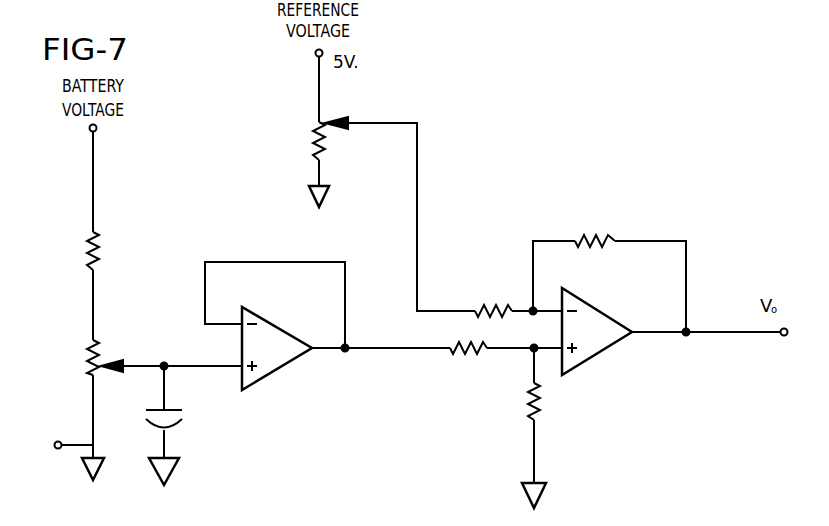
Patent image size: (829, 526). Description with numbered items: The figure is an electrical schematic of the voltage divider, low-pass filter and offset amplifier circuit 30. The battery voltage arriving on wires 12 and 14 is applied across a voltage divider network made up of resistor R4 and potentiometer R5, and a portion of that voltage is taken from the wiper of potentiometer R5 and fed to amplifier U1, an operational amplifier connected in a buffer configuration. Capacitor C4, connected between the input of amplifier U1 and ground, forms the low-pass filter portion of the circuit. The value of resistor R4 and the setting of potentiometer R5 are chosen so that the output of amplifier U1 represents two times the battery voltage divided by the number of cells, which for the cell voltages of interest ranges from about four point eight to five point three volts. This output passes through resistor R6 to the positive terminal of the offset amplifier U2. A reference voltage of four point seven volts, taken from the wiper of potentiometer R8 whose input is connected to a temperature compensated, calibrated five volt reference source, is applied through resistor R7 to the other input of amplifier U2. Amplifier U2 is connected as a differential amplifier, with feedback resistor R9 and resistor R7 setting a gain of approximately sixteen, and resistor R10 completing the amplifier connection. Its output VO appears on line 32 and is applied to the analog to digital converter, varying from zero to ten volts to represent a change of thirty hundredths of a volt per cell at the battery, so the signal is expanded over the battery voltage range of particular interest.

The wire 12 is at (88, 131).
The wire 14 is at (57, 452).
The voltage divider, low-pass filter and offset amplifier circuit 30 is at (534, 138).
The line 32 is at (759, 334).
The resistor R4 is at (107, 251).
The potentiometer R5 is at (145, 358).
The resistor R6 is at (506, 363).
The resistor R7 is at (517, 298).
The potentiometer R8 is at (372, 181).
The resistor R9 is at (611, 274).
The resistor R10 is at (553, 428).
The capacitor C4 is at (179, 424).
The amplifier U1 is at (327, 326).
The offset amplifier U2 is at (671, 331).